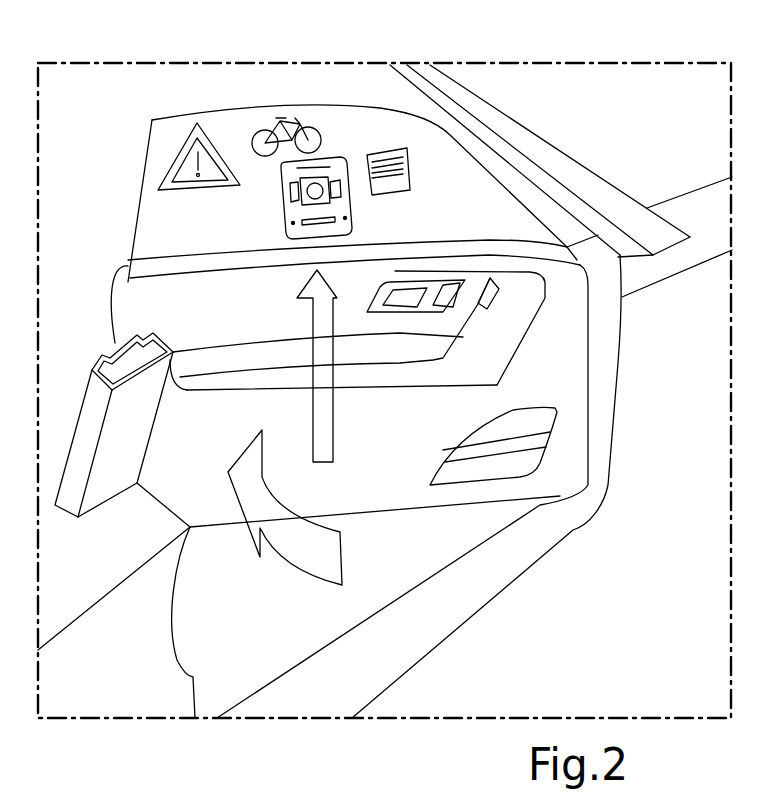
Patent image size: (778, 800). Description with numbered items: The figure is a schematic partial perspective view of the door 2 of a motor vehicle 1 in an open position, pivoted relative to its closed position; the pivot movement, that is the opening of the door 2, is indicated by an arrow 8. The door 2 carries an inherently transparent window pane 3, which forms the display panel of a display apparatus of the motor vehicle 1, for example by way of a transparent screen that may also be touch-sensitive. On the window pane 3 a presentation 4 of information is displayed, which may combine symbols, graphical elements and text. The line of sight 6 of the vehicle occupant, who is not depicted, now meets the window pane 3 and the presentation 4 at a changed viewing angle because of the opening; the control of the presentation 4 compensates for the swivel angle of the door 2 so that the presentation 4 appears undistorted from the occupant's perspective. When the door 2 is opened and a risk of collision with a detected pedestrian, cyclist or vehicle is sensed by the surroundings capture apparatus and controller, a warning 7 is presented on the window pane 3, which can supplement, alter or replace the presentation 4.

The motor vehicle 1 is at (605, 102).
The door 2 is at (365, 483).
The window pane 3 is at (238, 120).
The presentation 4 is at (337, 160).
The arrow indicating line of sight 6 is at (322, 402).
The warning 7 is at (187, 165).
The arrow indicating pivot movement 8 is at (322, 567).